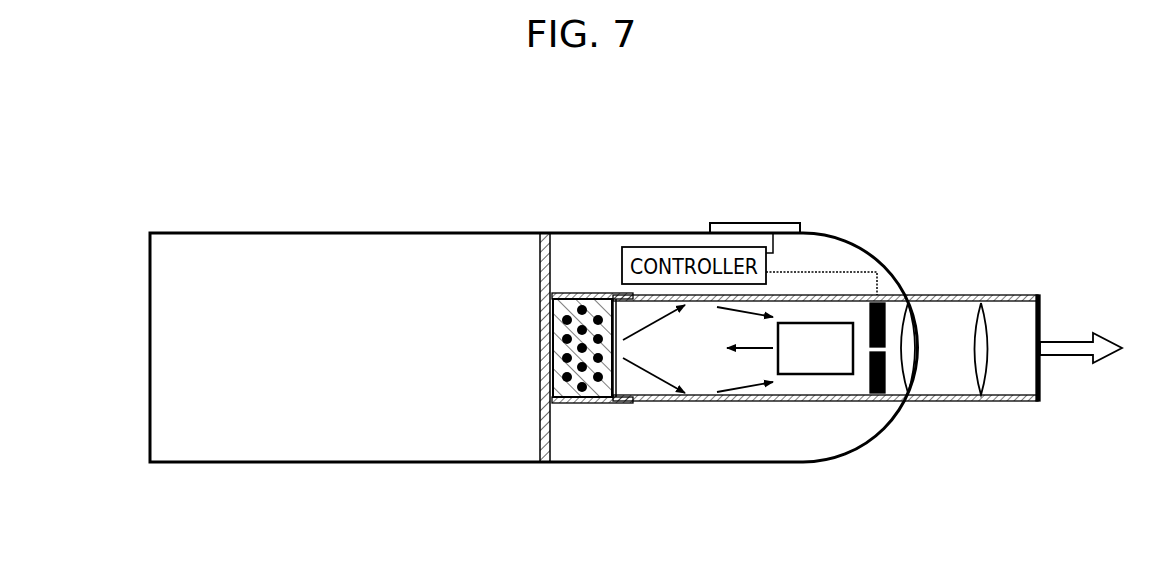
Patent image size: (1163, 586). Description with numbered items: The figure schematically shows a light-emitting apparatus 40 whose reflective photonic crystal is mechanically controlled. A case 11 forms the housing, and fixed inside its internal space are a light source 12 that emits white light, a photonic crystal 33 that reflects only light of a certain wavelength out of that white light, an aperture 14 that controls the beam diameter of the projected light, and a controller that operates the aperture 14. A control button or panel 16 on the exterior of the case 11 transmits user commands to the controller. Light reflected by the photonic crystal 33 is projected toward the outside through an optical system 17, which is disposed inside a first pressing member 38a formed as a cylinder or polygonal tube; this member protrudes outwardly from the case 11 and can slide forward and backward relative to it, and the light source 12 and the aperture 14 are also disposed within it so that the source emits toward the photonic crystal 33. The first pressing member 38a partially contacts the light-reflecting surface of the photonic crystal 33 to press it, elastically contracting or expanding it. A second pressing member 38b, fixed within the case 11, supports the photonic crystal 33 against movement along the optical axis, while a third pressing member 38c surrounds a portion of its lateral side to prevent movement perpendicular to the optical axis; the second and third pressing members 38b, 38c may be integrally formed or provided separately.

The case 11 is at (200, 463).
The light-emitting apparatus 40 is at (330, 476).
The second pressing member 38b is at (540, 267).
The third pressing member 38c is at (585, 292).
The photonic crystal 33 is at (580, 403).
The first pressing member 38a is at (833, 300).
The control button or panel 16 is at (780, 223).
The light source 12 is at (806, 374).
The aperture 14 is at (870, 395).
The optical system 17 is at (920, 310).